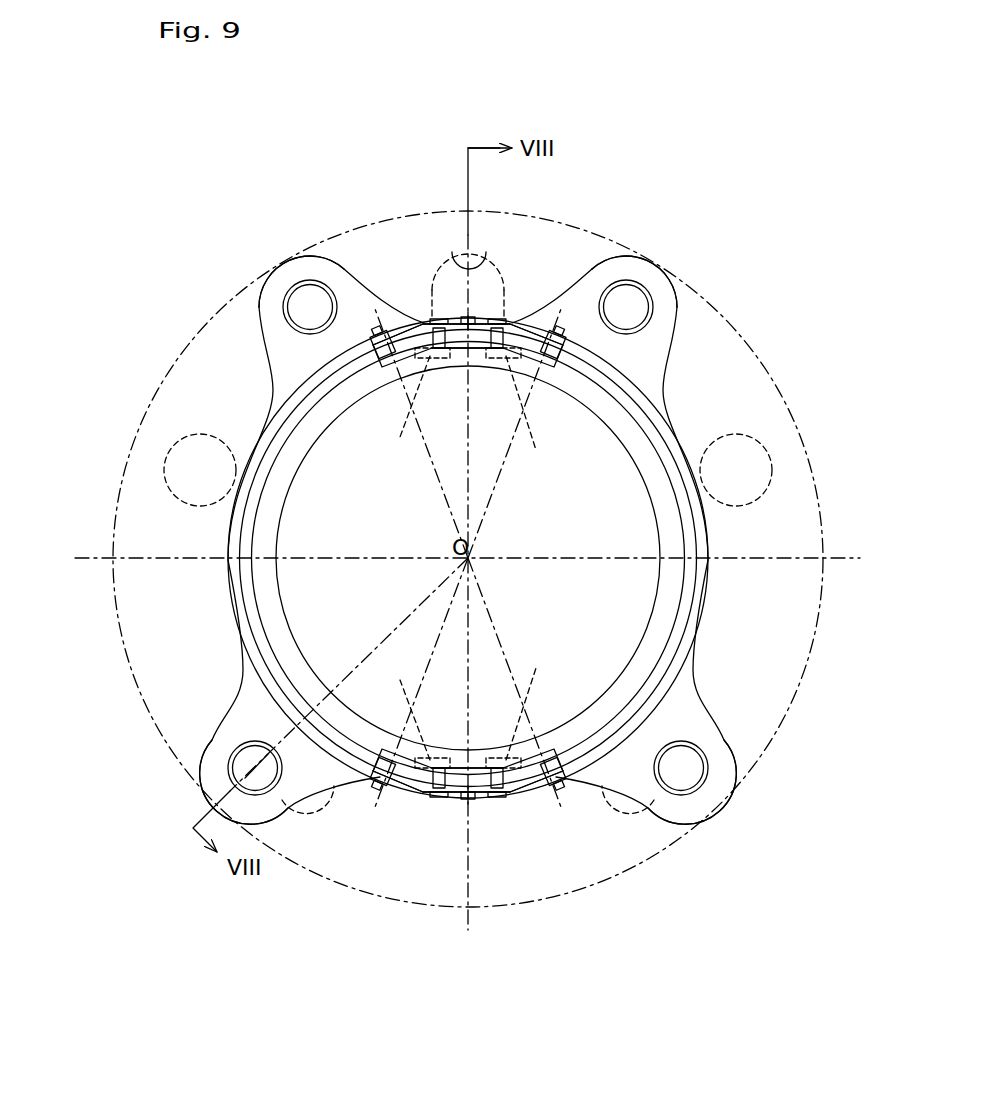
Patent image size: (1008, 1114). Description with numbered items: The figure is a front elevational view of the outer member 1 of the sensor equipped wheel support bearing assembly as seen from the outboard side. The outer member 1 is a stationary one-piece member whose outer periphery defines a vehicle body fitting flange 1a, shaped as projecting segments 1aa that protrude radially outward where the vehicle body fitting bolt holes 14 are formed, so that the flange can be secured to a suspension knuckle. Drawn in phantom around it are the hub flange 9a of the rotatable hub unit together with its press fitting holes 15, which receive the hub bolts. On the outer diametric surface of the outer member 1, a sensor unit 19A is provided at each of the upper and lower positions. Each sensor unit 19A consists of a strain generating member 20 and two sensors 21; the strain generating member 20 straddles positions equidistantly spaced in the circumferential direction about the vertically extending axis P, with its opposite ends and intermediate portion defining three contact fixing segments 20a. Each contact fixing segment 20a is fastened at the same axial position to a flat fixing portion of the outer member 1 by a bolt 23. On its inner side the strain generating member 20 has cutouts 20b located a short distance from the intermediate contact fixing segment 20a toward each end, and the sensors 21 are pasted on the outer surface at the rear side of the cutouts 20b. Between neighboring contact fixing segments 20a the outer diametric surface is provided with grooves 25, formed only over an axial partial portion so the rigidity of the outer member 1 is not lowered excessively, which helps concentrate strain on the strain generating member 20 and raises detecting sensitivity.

The outer member 1 is at (700, 393).
The vehicle body fitting flange 1a is at (712, 540).
The projecting segments 1aa is at (352, 262).
The hub flange 9a is at (196, 333).
The vehicle body fitting bolt holes 14 is at (322, 305).
The press fitting holes 15 is at (450, 248).
The sensor unit 19A is at (480, 307).
The strain generating member 20 is at (412, 337).
The contact fixing segments 20a is at (408, 362).
The cutouts 20b is at (440, 352).
The sensors 21 is at (437, 315).
The bolt 23 is at (464, 318).
The grooves 25 is at (469, 558).
The vertically extending axis P is at (470, 232).